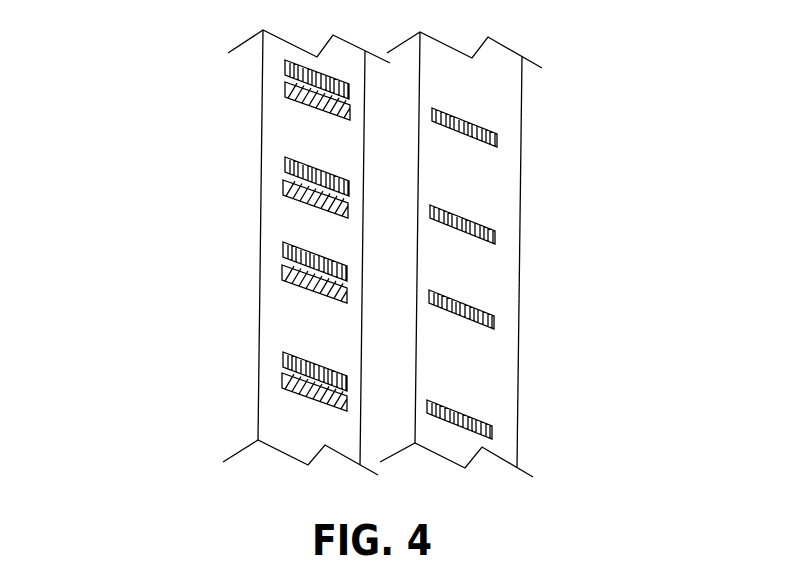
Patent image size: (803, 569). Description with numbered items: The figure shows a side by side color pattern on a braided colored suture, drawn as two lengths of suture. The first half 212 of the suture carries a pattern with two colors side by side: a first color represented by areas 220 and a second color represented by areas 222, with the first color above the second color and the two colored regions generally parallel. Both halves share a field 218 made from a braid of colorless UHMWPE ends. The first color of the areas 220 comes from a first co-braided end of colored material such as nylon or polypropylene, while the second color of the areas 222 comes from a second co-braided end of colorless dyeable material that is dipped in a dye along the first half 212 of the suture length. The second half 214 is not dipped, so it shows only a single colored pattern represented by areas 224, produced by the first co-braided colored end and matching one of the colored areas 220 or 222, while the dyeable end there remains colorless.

The first half 212 is at (252, 316).
The second half 214 is at (532, 280).
The field 218 is at (380, 253).
The first color areas 220 is at (285, 63).
The second color areas 222 is at (285, 86).
The single colored pattern areas 224 is at (497, 140).